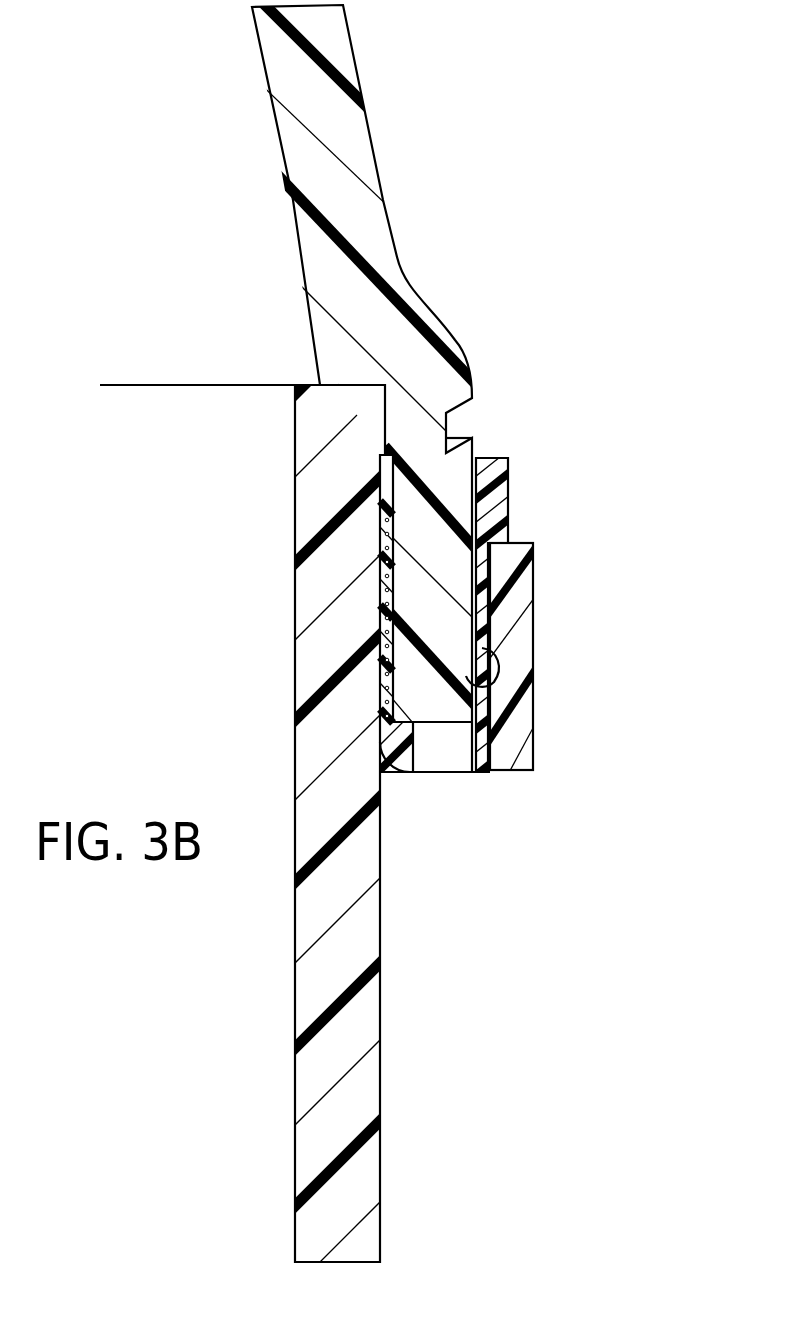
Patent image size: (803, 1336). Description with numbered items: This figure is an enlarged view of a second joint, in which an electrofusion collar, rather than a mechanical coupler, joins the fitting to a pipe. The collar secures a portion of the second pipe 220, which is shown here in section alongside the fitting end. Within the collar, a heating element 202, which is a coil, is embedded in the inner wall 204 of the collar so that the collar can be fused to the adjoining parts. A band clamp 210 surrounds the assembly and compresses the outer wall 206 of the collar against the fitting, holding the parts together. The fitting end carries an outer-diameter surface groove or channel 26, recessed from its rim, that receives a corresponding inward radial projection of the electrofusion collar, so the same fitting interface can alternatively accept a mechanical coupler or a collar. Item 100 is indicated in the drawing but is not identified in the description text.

The mounting arm 100 is at (495, 412).
The heating element 202 is at (392, 546).
The inner wall 204 is at (362, 528).
The outer wall 206 is at (497, 516).
The band clamp 210 is at (523, 588).
The second pipe 220 is at (358, 918).
The groove 26 is at (482, 648).